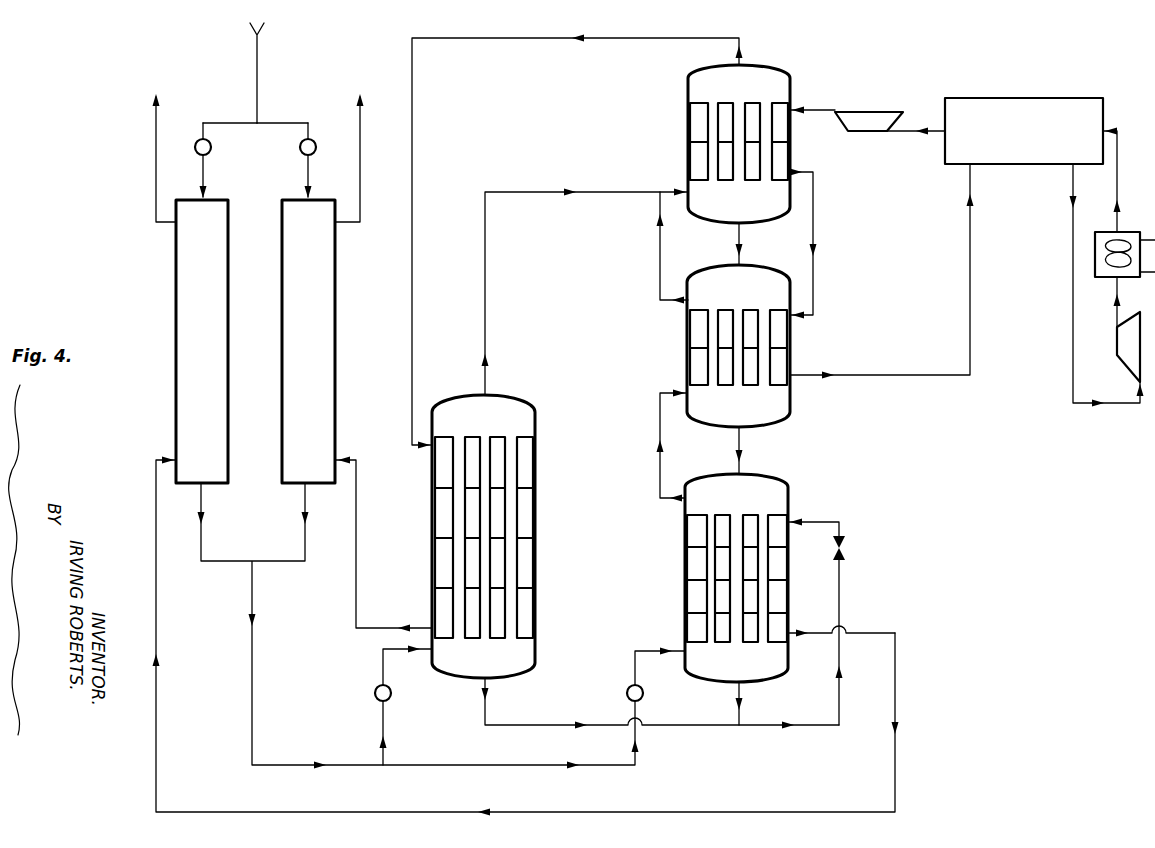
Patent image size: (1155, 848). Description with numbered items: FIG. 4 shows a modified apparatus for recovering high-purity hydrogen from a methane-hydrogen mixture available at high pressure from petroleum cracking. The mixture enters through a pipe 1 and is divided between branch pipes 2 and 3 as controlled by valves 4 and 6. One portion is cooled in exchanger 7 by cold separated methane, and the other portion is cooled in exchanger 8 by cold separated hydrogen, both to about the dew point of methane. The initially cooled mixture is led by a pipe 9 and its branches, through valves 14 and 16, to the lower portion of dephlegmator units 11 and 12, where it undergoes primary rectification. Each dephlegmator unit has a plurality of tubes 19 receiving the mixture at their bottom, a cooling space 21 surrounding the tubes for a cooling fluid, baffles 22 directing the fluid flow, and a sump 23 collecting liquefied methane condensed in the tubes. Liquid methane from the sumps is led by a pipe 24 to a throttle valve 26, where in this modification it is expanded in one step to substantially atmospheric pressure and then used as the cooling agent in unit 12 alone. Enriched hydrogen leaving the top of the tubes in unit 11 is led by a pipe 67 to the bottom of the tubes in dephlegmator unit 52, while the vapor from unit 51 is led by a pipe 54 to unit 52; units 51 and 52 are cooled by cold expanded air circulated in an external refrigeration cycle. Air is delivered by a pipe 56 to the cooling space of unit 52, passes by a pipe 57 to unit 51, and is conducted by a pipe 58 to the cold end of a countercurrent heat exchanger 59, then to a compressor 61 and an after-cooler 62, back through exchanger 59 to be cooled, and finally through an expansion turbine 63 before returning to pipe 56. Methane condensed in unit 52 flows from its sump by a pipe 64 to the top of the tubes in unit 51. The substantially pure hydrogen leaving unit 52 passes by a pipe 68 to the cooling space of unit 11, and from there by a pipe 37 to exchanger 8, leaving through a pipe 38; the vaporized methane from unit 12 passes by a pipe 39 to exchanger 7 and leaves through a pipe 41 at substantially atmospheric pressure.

The pipe 1 is at (262, 68).
The branch pipe 2 is at (238, 122).
The branch pipe 3 is at (284, 123).
The valve 4 is at (195, 152).
The valve 6 is at (300, 152).
The exchanger 7 is at (202, 341).
The exchanger 8 is at (308, 341).
The pipe 9 is at (252, 682).
The dephlegmator unit 11 is at (432, 526).
The dephlegmator unit 12 is at (685, 558).
The valve 14 is at (374, 692).
The valve 16 is at (626, 692).
The tubes 19 is at (512, 440).
The cooling space 21 is at (440, 478).
The baffles 22 is at (522, 538).
The sump 23 is at (609, 435).
The pipe 24 is at (814, 724).
The throttle valve 26 is at (845, 546).
The pipe 37 is at (362, 618).
The pipe 38 is at (360, 160).
The pipe 39 is at (156, 604).
The pipe 41 is at (156, 156).
The dephlegmator unit 51 is at (687, 369).
The dephlegmator unit 52 is at (688, 161).
The pipe 54 is at (660, 252).
The pipe 56 is at (822, 102).
The pipe 57 is at (814, 244).
The pipe 58 is at (970, 300).
The countercurrent heat exchanger 59 is at (995, 131).
The compressor 61 is at (1124, 355).
The after-cooler 62 is at (1101, 279).
The expansion turbine 63 is at (876, 102).
The pipe 64 is at (739, 242).
The pipe 67 is at (485, 304).
The pipe 68 is at (510, 38).